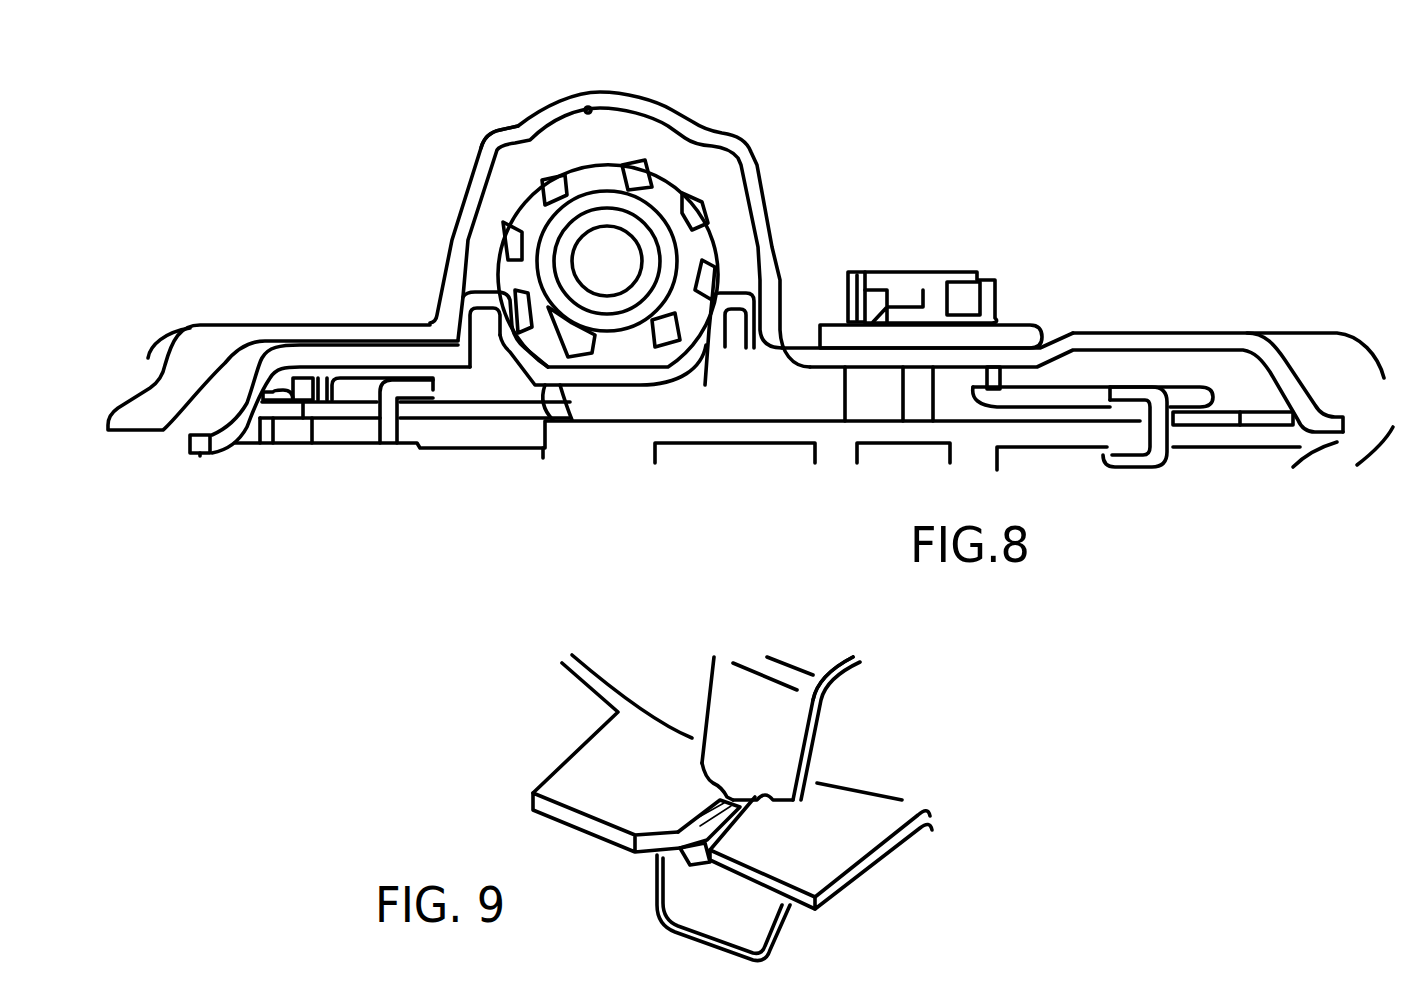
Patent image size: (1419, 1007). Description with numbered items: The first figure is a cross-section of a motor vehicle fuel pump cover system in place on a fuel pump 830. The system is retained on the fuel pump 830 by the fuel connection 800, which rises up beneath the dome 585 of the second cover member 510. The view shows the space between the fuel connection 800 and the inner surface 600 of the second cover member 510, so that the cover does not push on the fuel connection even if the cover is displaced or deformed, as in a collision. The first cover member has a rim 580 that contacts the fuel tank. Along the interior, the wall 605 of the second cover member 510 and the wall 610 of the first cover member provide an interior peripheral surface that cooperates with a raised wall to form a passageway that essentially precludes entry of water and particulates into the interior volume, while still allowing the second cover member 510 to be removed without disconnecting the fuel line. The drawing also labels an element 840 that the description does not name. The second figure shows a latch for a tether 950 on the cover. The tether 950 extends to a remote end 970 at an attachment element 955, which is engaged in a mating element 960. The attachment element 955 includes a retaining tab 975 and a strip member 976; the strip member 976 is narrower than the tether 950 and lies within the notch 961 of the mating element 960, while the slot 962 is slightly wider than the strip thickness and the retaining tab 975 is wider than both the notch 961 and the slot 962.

In FIG. 8, the inner surface 600 is at (586, 108).
In FIG. 8, the dome 585 is at (500, 128).
In FIG. 8, the fuel connection 800 is at (625, 248).
In FIG. 8, the second cover member 510 is at (758, 193).
In FIG. 8, the wall 605 is at (772, 262).
In FIG. 8, the flange end 840 is at (190, 443).
In FIG. 8, the rim 580 is at (210, 457).
In FIG. 8, the wall 610 is at (475, 342).
In FIG. 8, the fuel pump 830 is at (577, 460).
In FIG. 9, the tether 950 is at (852, 662).
In FIG. 9, the remote end 970 is at (729, 758).
In FIG. 9, the attachment element 955 is at (733, 797).
In FIG. 9, the strip member 976 is at (693, 830).
In FIG. 9, the notch 961 is at (773, 803).
In FIG. 9, the mating element 960 is at (840, 853).
In FIG. 9, the slot 962 is at (677, 850).
In FIG. 9, the retaining tab 975 is at (723, 908).